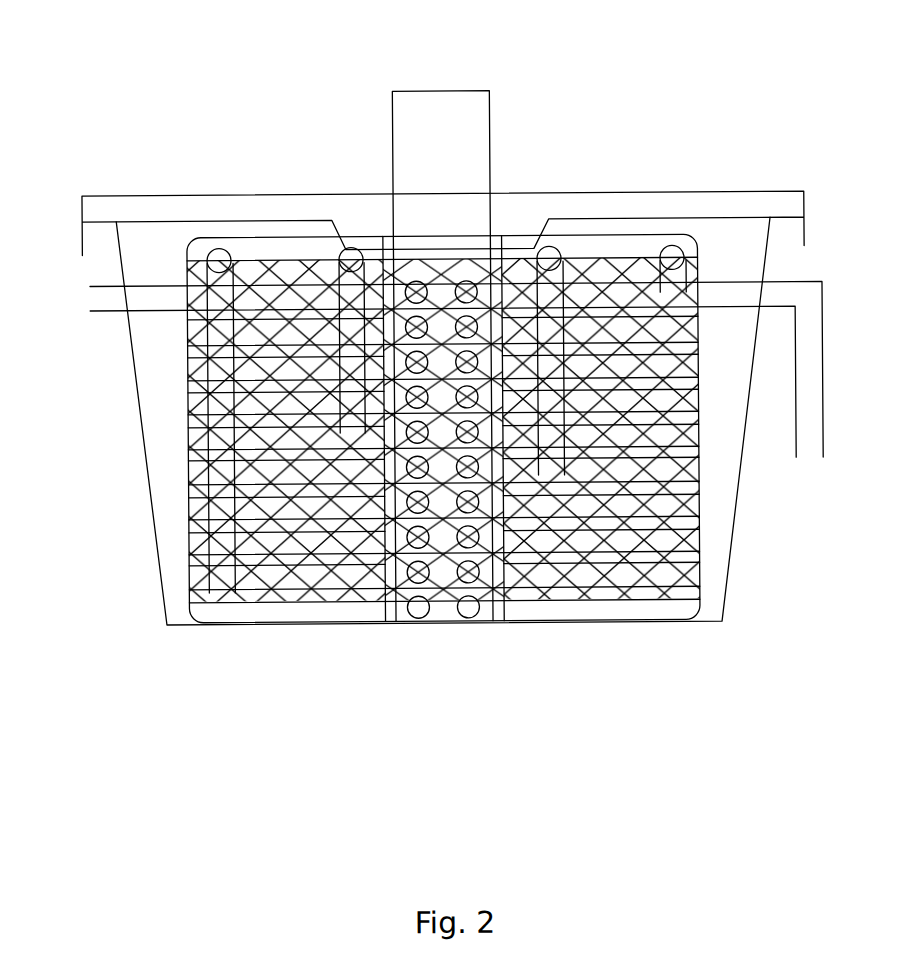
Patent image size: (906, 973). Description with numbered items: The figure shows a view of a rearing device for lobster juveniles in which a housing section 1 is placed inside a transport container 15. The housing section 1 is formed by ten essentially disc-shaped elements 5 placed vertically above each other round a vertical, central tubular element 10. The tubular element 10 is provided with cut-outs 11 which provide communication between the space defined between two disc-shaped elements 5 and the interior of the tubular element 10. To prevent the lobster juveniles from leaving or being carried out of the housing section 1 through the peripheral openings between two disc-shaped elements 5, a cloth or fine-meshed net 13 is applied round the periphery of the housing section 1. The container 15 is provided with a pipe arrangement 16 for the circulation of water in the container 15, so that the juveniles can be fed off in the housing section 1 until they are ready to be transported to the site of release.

The housing section 1 is at (187, 411).
The disc-shaped elements 5 is at (267, 580).
The tubular element 10 is at (465, 127).
The cut-outs 11 is at (418, 608).
The fine-meshed net 13 is at (627, 597).
The transport container 15 is at (725, 497).
The pipe arrangement 16 is at (807, 307).